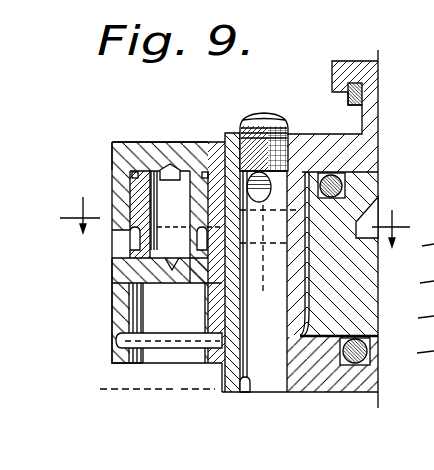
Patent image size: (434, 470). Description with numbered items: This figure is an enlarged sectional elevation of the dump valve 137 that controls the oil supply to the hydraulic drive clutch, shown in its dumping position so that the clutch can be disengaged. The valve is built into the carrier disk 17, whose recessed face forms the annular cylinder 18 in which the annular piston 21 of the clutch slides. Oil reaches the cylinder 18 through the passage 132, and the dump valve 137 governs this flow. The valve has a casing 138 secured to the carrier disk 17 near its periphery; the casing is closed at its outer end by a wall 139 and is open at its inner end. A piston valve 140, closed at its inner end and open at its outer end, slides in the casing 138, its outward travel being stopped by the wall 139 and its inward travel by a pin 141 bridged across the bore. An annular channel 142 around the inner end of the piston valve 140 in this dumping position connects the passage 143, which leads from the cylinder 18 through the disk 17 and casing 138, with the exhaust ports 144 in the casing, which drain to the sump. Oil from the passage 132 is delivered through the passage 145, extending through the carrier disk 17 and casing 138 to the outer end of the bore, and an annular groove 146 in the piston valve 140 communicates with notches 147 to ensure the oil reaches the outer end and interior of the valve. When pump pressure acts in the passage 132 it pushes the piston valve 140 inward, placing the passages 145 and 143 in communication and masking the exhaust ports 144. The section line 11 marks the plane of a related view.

The section line 11- 11 is at (220, 230).
The carrier disk 17 is at (309, 387).
The annular cylinder 18 is at (311, 172).
The annular piston 21 is at (368, 192).
The passage 132 is at (246, 388).
The dump valve 137 is at (120, 138).
The casing 138 is at (112, 164).
The wall 139 is at (165, 118).
The piston valve 140 is at (147, 284).
The pin 141 is at (137, 365).
The annular channel 142 is at (130, 248).
The passage 143 is at (270, 274).
The exhaust ports 144 is at (112, 278).
The passage 145 is at (265, 203).
The annular groove 146 is at (207, 165).
The notches 147 is at (171, 182).